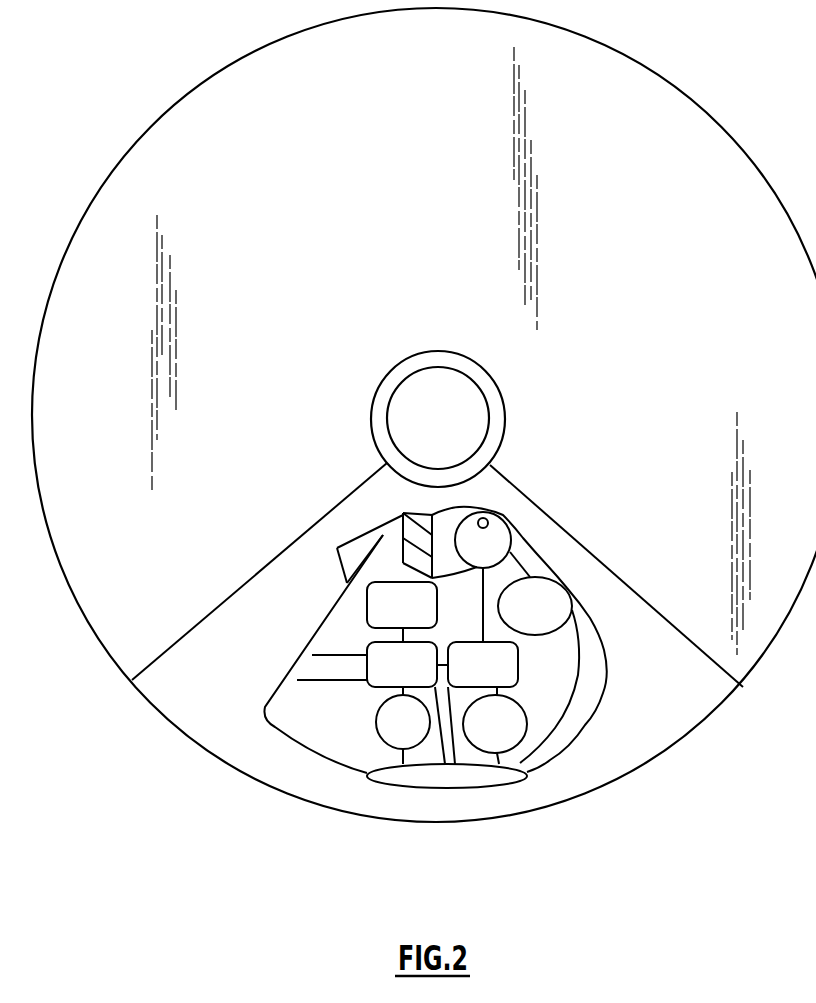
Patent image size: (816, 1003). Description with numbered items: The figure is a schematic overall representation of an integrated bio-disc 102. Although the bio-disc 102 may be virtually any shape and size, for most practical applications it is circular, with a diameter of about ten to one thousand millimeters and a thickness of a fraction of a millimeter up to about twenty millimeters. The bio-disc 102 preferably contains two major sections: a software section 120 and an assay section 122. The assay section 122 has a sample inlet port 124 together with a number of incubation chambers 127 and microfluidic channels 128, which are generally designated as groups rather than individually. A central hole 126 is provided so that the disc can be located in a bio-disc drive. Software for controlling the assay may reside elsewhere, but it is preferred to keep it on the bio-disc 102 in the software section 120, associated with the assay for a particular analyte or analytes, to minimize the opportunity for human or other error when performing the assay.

The bio-disc 102 is at (700, 107).
The software section 120 is at (449, 186).
The assay section 122 is at (203, 712).
The sample inlet port 124 is at (502, 517).
The central hole 126 is at (475, 403).
The incubation chambers 127 is at (557, 592).
The microfluidic channels 128 is at (568, 673).